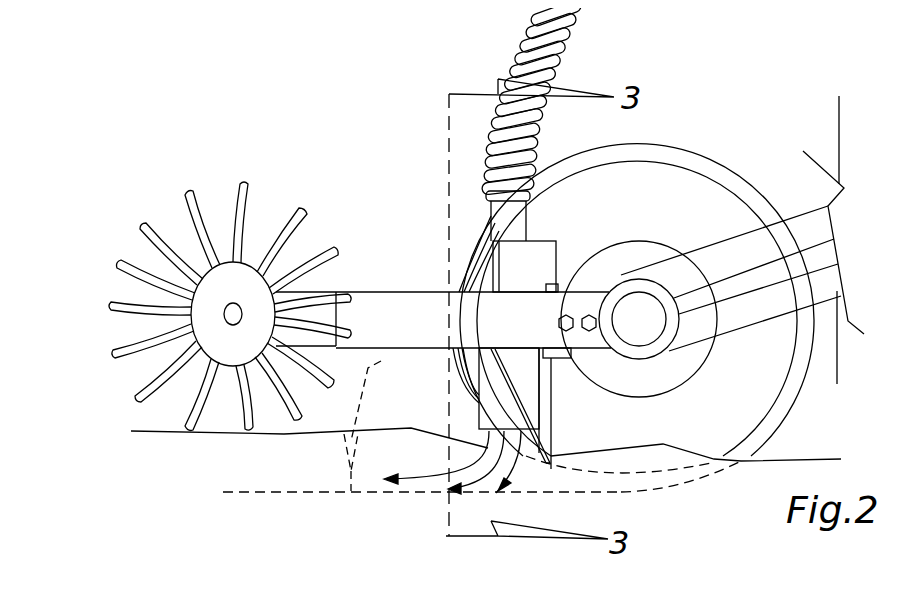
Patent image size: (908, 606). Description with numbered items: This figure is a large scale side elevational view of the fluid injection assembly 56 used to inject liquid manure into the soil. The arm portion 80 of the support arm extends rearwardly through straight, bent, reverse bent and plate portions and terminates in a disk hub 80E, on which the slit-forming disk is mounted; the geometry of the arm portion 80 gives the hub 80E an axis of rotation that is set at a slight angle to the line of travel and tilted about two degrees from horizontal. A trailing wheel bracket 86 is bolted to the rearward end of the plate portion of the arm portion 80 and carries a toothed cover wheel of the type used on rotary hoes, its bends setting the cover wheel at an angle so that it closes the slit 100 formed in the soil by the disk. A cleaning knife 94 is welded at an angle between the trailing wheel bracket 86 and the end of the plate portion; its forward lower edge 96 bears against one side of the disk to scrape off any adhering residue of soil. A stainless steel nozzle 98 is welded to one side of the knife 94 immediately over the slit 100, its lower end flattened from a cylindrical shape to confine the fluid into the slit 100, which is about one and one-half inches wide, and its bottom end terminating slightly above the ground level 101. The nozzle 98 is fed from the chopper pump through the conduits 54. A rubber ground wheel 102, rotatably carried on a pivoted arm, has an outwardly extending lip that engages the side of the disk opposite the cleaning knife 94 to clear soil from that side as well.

The conduits 54 is at (523, 33).
The fluid injection assembly 56 is at (365, 131).
The arm portion 80 is at (711, 212).
The disk hub 80E is at (622, 293).
The trailing wheel bracket 86 is at (245, 183).
The cleaning knife 94 is at (510, 265).
The forward lower edge 96 is at (549, 400).
The stainless steel nozzle 98 is at (487, 407).
The slit 100 is at (377, 362).
The ground level 101 is at (812, 458).
The ground wheel 102 is at (457, 374).